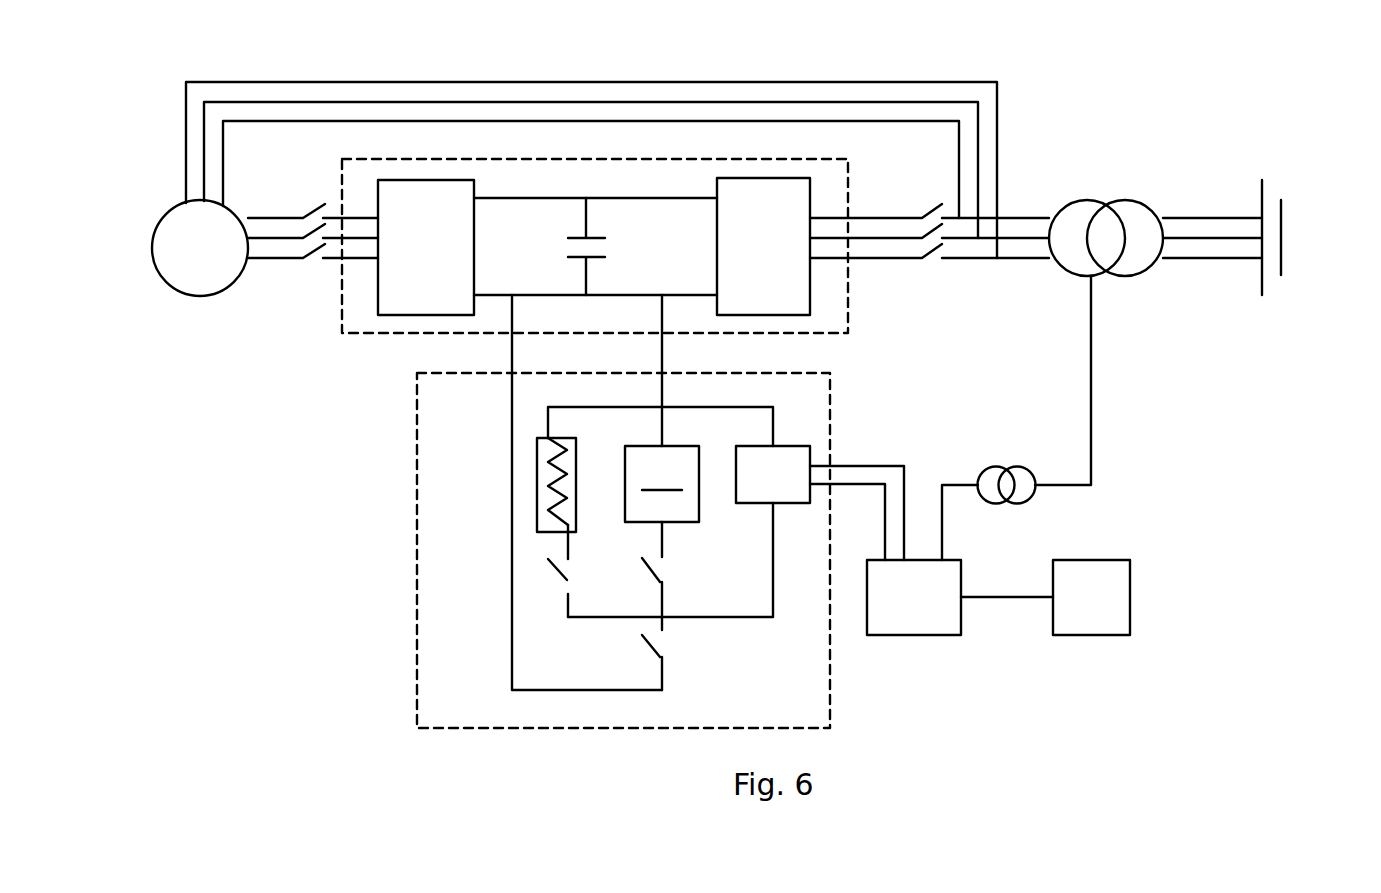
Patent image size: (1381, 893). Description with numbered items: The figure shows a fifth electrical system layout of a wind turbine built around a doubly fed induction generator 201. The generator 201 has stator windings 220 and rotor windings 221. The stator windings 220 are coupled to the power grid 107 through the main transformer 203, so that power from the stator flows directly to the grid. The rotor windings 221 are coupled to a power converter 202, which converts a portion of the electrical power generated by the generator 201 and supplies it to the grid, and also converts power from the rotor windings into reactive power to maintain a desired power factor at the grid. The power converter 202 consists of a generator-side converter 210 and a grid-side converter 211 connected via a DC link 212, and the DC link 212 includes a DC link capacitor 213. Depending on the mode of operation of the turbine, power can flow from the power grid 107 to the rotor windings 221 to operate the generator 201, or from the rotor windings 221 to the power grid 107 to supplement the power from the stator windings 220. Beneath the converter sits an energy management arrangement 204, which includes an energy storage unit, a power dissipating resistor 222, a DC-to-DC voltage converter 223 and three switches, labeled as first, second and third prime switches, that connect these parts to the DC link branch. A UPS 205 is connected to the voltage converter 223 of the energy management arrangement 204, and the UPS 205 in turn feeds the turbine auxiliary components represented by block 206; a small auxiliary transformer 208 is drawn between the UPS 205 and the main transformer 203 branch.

The doubly fed induction generator 201 is at (166, 214).
The stator windings 220 is at (303, 104).
The rotor windings 221 is at (273, 238).
The power converter 202 is at (850, 196).
The generator-side converter 210 is at (435, 226).
The grid-side converter 211 is at (773, 222).
The DC link 212 is at (494, 198).
The DC link capacitor 213 is at (583, 277).
The main transformer 203 is at (1119, 200).
The power grid 107 is at (1283, 220).
The energy management arrangement 204 is at (417, 501).
The power dissipating resistor 222 is at (578, 487).
The DC-to-DC voltage converter 223 is at (793, 491).
The UPS 205 is at (912, 636).
The turbine auxiliary components 206 is at (1112, 610).
The auxiliary transformer 208 is at (1003, 467).